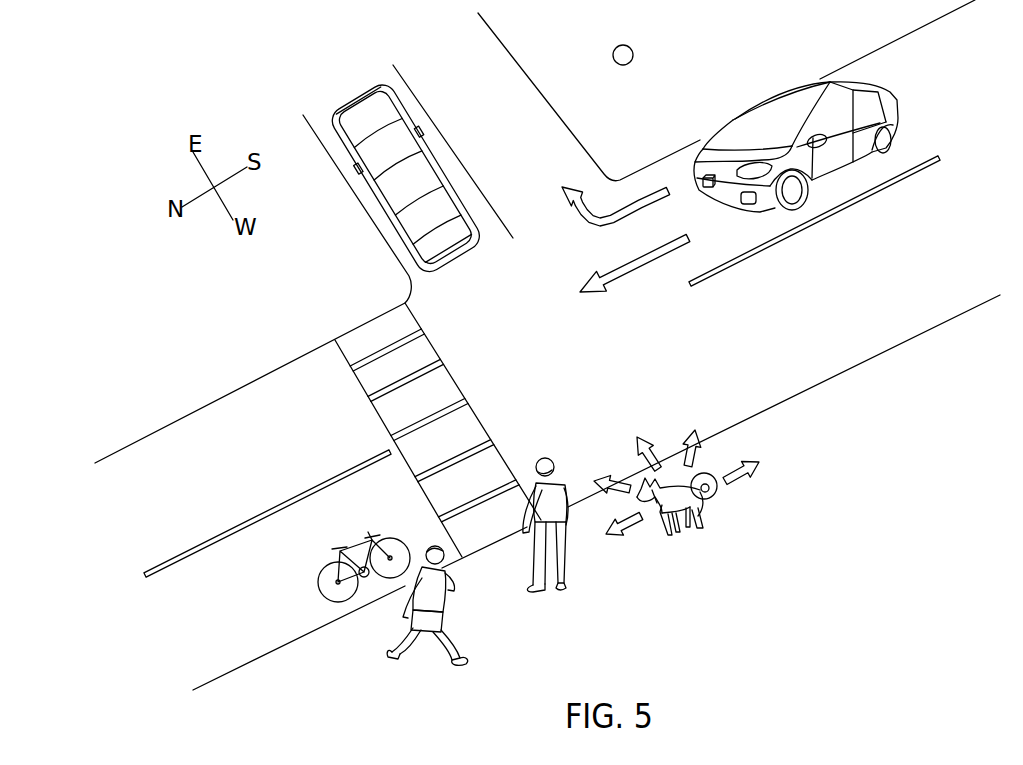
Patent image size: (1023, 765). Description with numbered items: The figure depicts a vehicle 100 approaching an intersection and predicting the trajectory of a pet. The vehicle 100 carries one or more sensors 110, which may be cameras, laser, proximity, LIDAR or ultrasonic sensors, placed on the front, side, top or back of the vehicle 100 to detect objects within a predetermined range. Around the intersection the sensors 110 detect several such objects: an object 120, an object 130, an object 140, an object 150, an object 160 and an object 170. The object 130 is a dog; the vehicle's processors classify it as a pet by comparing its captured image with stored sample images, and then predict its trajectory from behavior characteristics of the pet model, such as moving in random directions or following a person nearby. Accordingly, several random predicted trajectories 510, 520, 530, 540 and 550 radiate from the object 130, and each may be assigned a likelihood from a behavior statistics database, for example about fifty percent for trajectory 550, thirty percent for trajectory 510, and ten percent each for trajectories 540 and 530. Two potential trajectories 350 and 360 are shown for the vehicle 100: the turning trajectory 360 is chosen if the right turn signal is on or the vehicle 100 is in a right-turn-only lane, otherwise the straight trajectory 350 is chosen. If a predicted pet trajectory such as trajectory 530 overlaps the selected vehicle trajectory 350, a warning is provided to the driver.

The vehicle 100 is at (793, 82).
The sensor 110 is at (703, 187).
The object 120 is at (563, 563).
The object 130 is at (712, 520).
The object 140 is at (470, 656).
The object 150 is at (318, 586).
The object 160 is at (633, 53).
The object 170 is at (394, 232).
The trajectory 350 is at (627, 276).
The trajectory 360 is at (652, 191).
The trajectory 510 is at (745, 482).
The trajectory 520 is at (697, 428).
The trajectory 530 is at (645, 443).
The trajectory 540 is at (600, 476).
The trajectory 550 is at (636, 527).